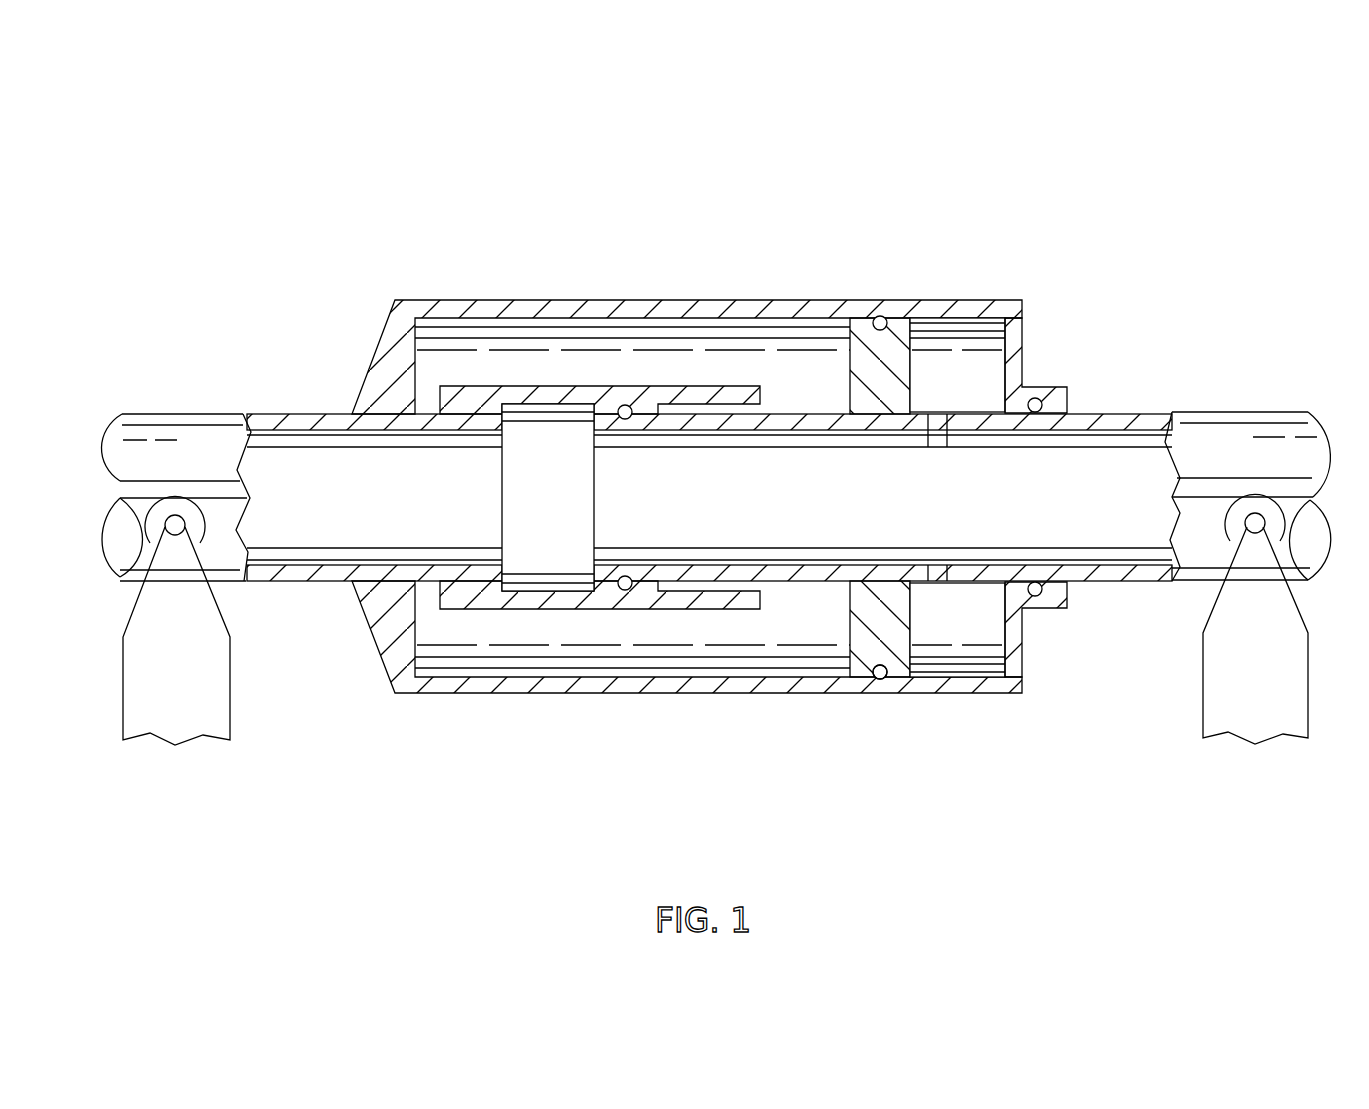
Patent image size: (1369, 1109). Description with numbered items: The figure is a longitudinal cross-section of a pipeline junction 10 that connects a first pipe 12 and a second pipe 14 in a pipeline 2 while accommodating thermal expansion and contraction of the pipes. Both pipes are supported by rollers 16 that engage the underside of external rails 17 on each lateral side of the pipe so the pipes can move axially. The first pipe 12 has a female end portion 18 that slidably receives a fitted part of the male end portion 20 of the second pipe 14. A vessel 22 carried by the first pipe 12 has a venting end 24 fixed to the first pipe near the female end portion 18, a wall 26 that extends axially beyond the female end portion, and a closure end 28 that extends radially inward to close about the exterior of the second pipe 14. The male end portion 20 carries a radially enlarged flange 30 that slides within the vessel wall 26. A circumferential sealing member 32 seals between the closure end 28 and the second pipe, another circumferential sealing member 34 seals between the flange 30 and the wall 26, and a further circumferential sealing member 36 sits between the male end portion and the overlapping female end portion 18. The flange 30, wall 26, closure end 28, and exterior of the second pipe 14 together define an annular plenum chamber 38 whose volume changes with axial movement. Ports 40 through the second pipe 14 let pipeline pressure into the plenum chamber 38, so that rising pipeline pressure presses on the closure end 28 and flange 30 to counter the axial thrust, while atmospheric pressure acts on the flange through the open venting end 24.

The pipeline 2 is at (272, 598).
The pipeline junction 10 is at (1106, 192).
The first pipe 12 is at (148, 413).
The second pipe 14 is at (1200, 410).
The rollers 16 is at (207, 547).
The external rails 17 is at (222, 500).
The female end portion 18 is at (606, 385).
The male end portion 20 is at (775, 410).
The vessel 22 is at (672, 282).
The venting end 24 is at (383, 385).
The wall 26 is at (790, 310).
The closure end 28 is at (1013, 333).
The radially enlarged flange 30 is at (850, 637).
The circumferential sealing member 32 is at (1035, 398).
The circumferential sealing member 34 is at (885, 678).
The circumferential sealing member 36 is at (627, 592).
The annular plenum chamber 38 is at (928, 385).
The ports 40 is at (940, 447).